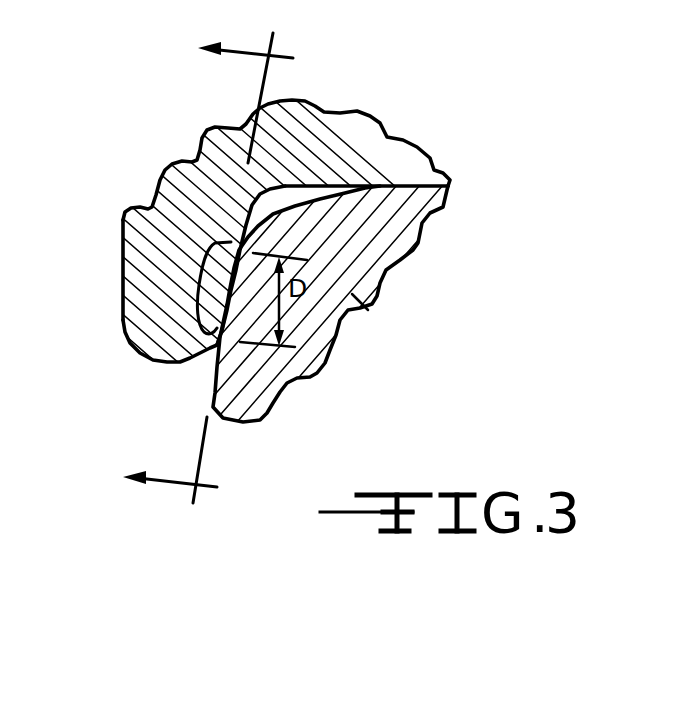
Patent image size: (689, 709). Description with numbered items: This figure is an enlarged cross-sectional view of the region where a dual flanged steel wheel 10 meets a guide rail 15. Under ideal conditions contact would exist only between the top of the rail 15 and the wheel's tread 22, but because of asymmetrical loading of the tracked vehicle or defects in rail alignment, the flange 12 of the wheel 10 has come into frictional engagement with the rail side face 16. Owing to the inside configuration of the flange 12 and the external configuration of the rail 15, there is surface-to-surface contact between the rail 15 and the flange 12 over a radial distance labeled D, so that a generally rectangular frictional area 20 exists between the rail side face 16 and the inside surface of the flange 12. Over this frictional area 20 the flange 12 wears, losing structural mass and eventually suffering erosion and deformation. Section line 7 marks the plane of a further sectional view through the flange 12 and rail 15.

The section line 7- 7 is at (208, 265).
The dual flanged steel wheel 10 is at (337, 113).
The flange 12 is at (135, 304).
The guide rail 15 is at (372, 306).
The rail side face 16 is at (212, 362).
The frictional area 20 is at (201, 270).
The tread 22 is at (350, 187).